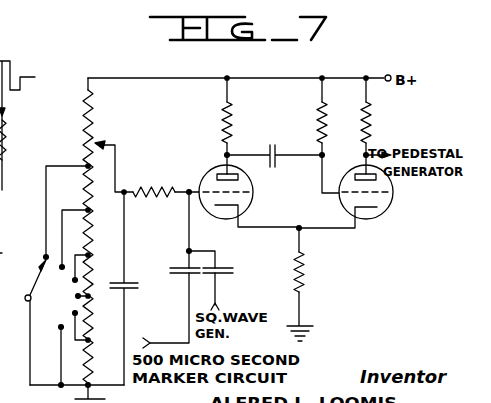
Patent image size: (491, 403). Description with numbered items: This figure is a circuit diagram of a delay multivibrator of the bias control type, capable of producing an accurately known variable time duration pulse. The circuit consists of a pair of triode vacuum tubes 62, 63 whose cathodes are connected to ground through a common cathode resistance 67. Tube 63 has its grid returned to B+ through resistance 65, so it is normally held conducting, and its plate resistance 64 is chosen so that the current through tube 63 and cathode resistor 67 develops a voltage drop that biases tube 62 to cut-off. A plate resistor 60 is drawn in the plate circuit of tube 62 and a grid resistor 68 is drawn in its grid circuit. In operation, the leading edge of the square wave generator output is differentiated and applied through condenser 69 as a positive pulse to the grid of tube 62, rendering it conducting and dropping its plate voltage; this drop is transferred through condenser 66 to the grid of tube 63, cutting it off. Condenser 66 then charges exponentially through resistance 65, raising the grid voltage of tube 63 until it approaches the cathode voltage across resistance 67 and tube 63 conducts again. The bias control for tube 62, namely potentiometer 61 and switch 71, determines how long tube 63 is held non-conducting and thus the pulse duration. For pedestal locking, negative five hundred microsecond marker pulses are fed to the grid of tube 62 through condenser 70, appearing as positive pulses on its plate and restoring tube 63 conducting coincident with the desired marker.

The plate load resistor 60 is at (231, 130).
The potentiometer 61 is at (95, 238).
The triode vacuum tube 62 is at (206, 176).
The triode vacuum tube 63 is at (390, 195).
The plate resistance 64 is at (368, 114).
The resistance 65 is at (324, 134).
The condenser 66 is at (282, 142).
The common cathode resistance 67 is at (303, 267).
The grid resistor 68 is at (166, 184).
The condenser 69 is at (232, 270).
The condenser 70 is at (171, 270).
The switch 71 is at (26, 322).